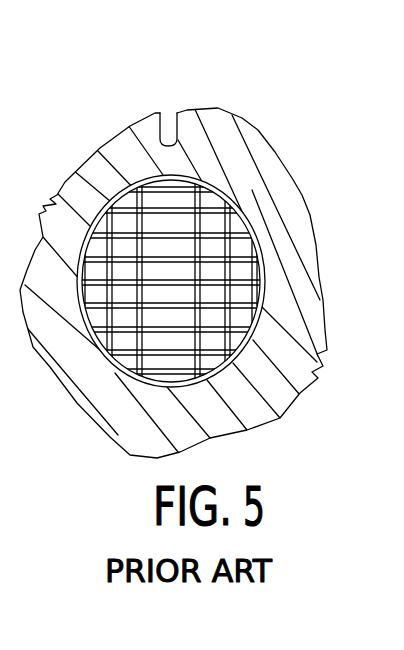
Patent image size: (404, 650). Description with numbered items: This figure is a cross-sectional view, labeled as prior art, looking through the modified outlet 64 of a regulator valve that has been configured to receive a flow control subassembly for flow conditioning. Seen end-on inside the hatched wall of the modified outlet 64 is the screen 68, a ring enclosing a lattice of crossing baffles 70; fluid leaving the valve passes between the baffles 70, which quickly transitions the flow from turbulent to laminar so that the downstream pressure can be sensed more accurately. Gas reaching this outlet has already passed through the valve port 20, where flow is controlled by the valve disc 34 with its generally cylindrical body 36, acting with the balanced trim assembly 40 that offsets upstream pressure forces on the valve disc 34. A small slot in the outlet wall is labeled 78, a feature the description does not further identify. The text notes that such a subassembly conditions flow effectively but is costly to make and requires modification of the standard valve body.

The valve port 20 is at (140, 343).
The valve disc 34 is at (158, 290).
The cylindrical body 36 is at (168, 281).
The balanced trim assembly 40 is at (216, 226).
The modified outlet 64 is at (77, 193).
The screen 68 is at (242, 226).
The baffles 70 is at (244, 302).
The slot 78 is at (174, 130).